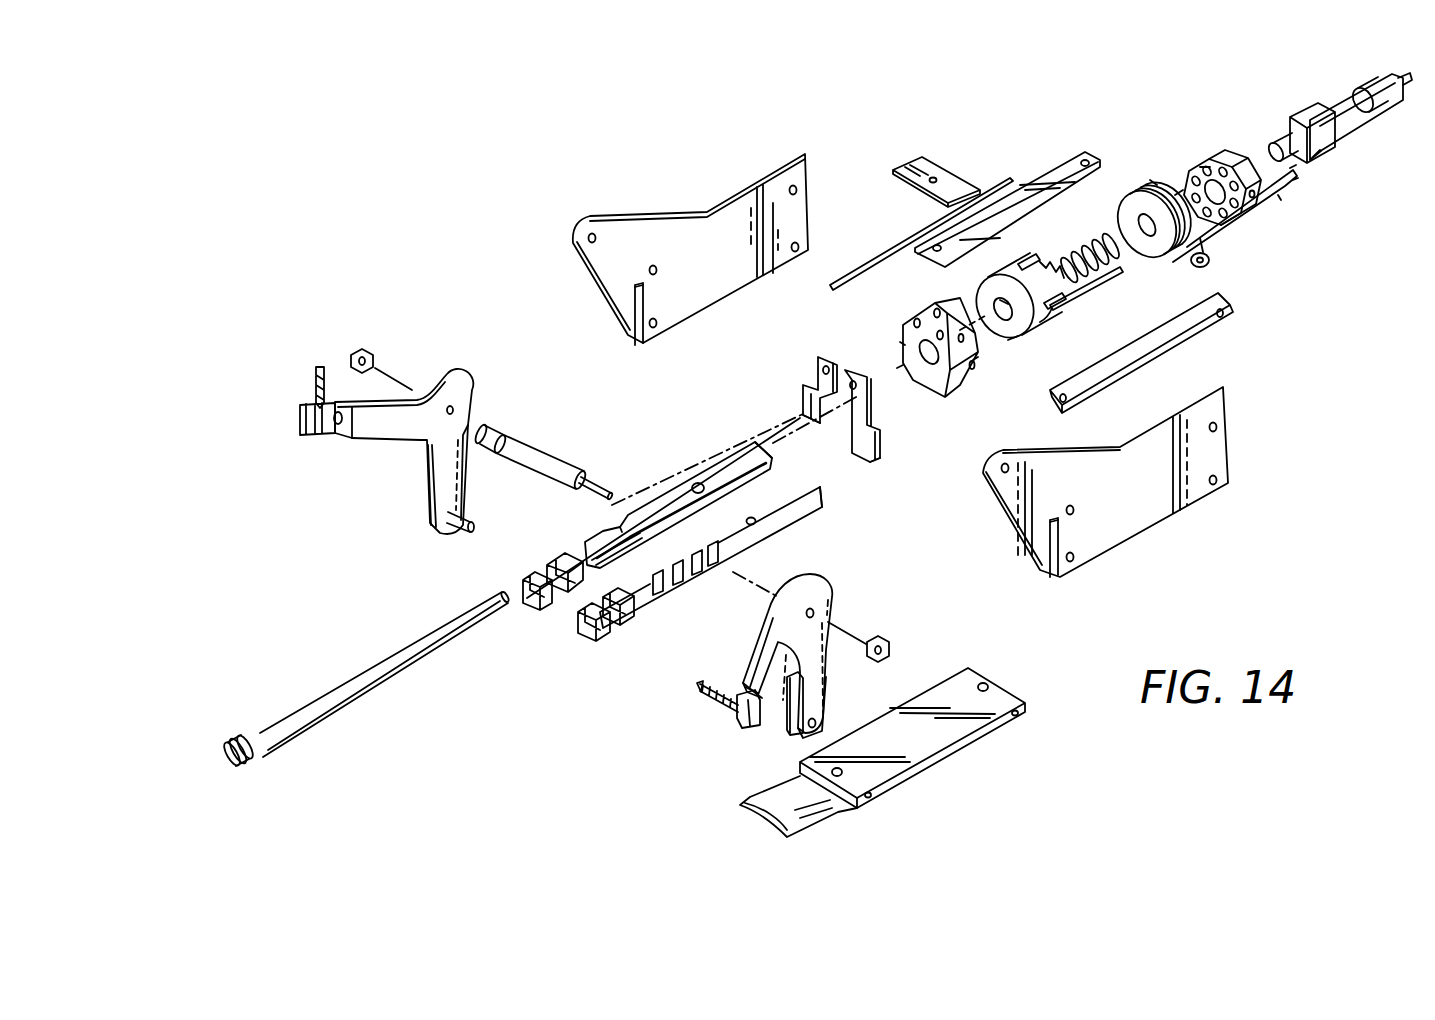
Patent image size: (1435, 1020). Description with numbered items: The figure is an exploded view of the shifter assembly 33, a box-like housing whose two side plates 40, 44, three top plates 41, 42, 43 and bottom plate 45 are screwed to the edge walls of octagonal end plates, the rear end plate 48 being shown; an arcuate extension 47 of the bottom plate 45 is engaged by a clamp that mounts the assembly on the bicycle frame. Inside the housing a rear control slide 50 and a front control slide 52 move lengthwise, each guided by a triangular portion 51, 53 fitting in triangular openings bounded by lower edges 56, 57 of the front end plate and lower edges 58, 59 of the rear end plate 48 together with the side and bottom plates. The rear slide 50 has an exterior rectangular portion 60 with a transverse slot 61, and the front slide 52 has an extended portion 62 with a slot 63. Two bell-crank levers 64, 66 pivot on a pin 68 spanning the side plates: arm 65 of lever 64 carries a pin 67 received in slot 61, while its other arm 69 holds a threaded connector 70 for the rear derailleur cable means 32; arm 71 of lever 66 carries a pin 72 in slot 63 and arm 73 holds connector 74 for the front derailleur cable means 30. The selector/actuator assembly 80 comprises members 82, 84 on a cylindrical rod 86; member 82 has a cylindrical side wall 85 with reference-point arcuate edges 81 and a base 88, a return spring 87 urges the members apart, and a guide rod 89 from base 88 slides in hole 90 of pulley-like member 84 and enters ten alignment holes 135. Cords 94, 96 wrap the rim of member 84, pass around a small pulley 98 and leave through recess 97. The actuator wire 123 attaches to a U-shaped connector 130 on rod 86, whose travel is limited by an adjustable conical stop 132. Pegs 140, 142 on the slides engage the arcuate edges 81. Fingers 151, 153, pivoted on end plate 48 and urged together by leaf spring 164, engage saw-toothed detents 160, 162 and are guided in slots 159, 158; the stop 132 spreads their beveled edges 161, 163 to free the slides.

The front derailleur cable means 30 is at (307, 367).
The rear derailleur cable means 32 is at (703, 699).
The shifter assembly 33 is at (1097, 582).
The side plate 40 is at (675, 212).
The top plate 41 is at (897, 235).
The top plate 42 is at (1063, 167).
The top plate 43 is at (1210, 328).
The side plate 44 is at (1152, 510).
The bottom plate 45 is at (966, 726).
The arcuate extension 47 is at (818, 798).
The rear end plate 48 is at (900, 342).
The rear control slide 50 is at (747, 548).
The triangular portion 51 is at (823, 506).
The front control slide 52 is at (727, 453).
The triangular portion 53 is at (762, 462).
The lower edge of front end plate 56 is at (1242, 218).
The lower edge of front end plate 57 is at (1180, 193).
The lower edge of rear end plate 58 is at (960, 384).
The lower edge of rear end plate 59 is at (897, 368).
The extending portion 60 is at (590, 622).
The transverse slot 61 is at (625, 622).
The extended portion 62 is at (533, 590).
The transverse slot 63 is at (548, 558).
The bell-crank lever 64 is at (832, 593).
The fixed length arm 65 is at (818, 694).
The bell-crank lever 66 is at (443, 372).
The pin 67 is at (782, 717).
The pin 68 is at (525, 452).
The arm 69 is at (762, 655).
The connector 70 is at (740, 728).
The fixed length arm 71 is at (436, 487).
The pin 72 is at (462, 534).
The arm 73 is at (375, 434).
The connector 74 is at (325, 431).
The selector/actuator assembly 80 is at (972, 293).
The arcuate edges 81 is at (1022, 267).
The selector/actuator member 82 is at (976, 362).
The selector/actuator member 84 is at (1165, 257).
The cylindrical side wall 85 is at (1012, 336).
The cylindrical rod 86 is at (1283, 145).
The return spring 87 is at (1090, 250).
The circular base 88 is at (990, 302).
The guide rod 89 is at (1110, 280).
The hole 90 is at (1158, 243).
The cord 94 is at (1284, 181).
The cord 96 is at (1157, 183).
The recess 97 is at (1217, 236).
The small pulley 98 is at (1205, 267).
The wire 123 is at (1407, 86).
The connector 130 is at (1351, 126).
The stop member 132 is at (267, 755).
The alignment holes 135 is at (1211, 165).
The peg 140 is at (800, 530).
The peg 142 is at (695, 485).
The finger 151 is at (903, 430).
The finger 153 is at (817, 362).
The slot 158 is at (645, 300).
The slot 159 is at (1060, 535).
The saw-toothed detents 160 is at (690, 577).
The beveled inner edge portion 161 is at (857, 443).
The saw-toothed detents 162 is at (580, 542).
The beveled inner edge portion 163 is at (802, 415).
The leaf spring 164 is at (933, 162).